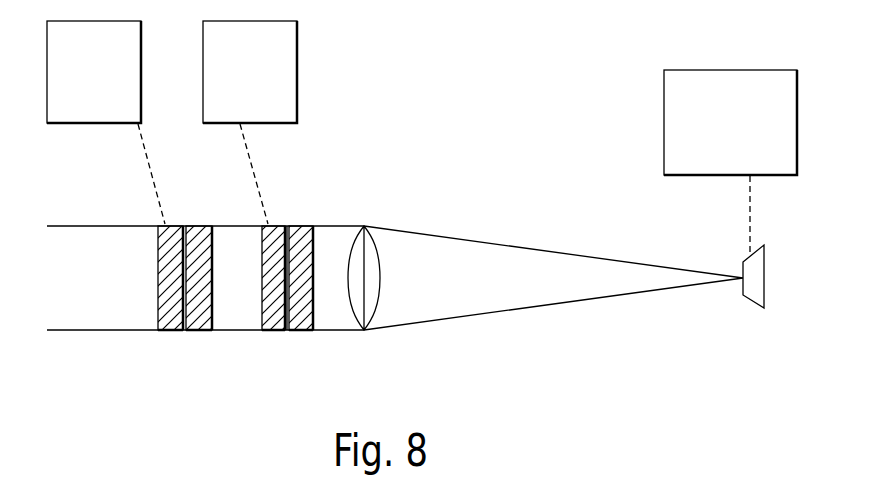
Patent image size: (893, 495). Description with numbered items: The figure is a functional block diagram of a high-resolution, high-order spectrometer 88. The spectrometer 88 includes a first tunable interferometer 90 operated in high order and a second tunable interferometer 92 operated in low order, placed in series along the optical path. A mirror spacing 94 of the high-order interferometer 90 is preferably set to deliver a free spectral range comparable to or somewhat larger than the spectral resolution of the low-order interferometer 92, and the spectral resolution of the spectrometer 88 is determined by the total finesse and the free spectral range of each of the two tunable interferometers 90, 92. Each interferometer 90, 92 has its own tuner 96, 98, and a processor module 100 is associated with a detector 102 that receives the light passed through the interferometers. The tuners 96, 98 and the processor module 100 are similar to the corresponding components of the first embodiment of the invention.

The high-resolution, high-order spectrometer 88 is at (532, 333).
The first tunable interferometer 90 is at (288, 348).
The second tunable interferometer 92 is at (183, 348).
The mirror spacing 94 is at (288, 222).
The tuner 96 is at (297, 35).
The tuner 98 is at (141, 35).
The processor module 100 is at (664, 101).
The detector 102 is at (752, 305).